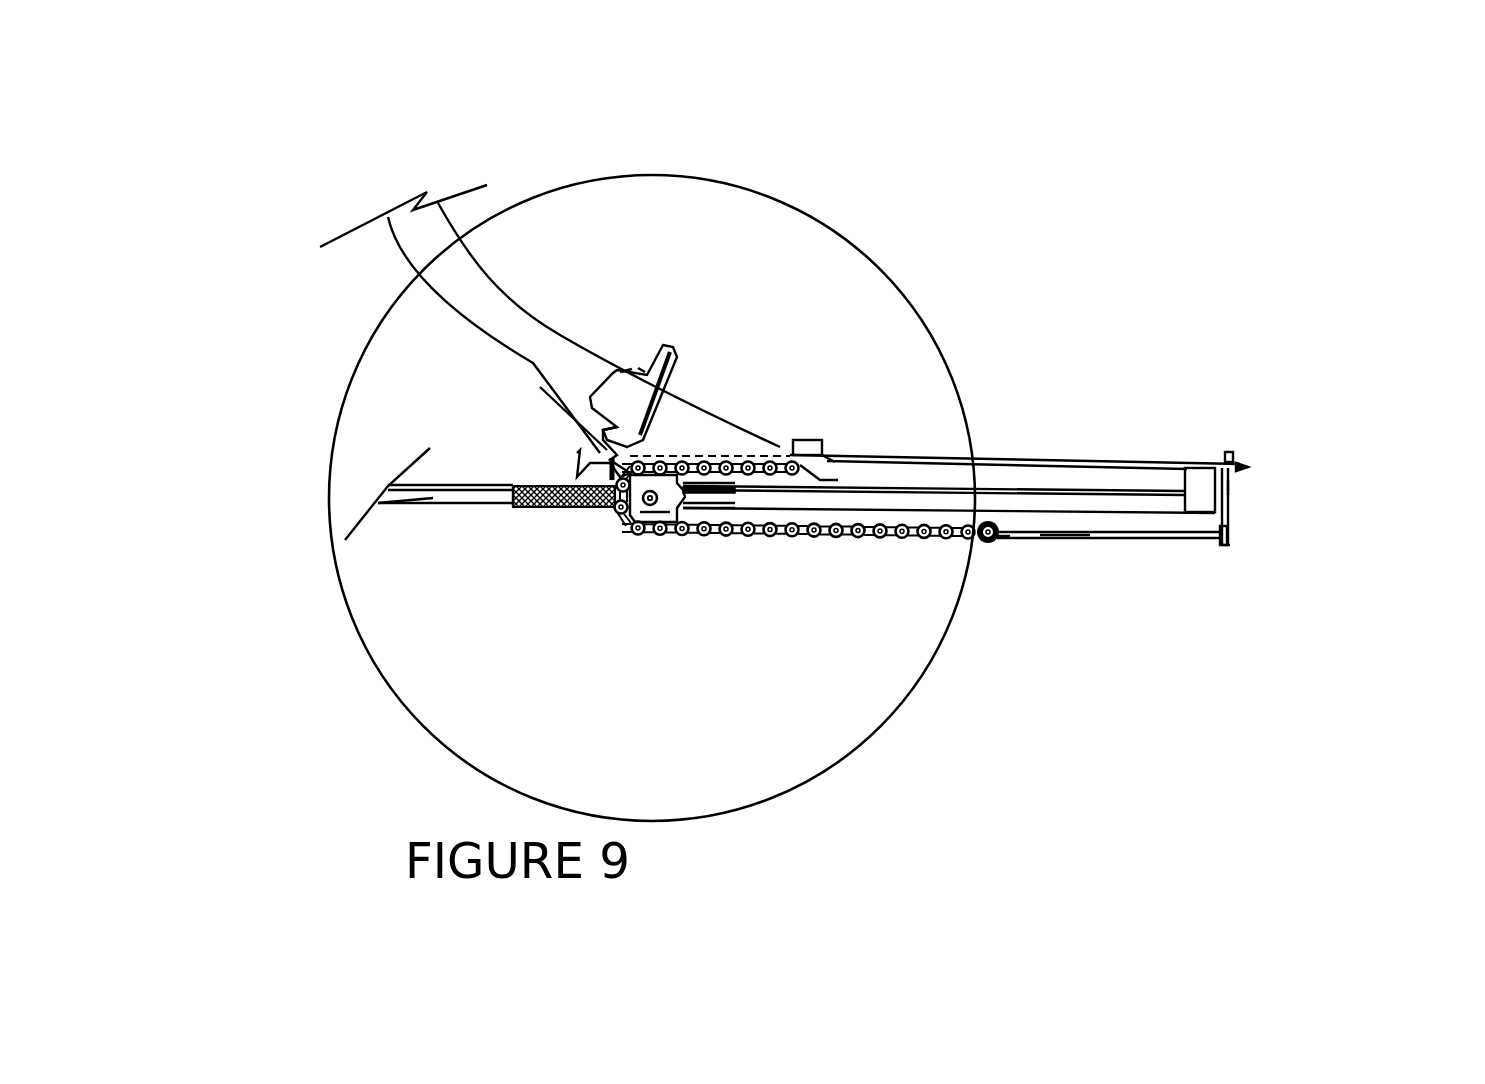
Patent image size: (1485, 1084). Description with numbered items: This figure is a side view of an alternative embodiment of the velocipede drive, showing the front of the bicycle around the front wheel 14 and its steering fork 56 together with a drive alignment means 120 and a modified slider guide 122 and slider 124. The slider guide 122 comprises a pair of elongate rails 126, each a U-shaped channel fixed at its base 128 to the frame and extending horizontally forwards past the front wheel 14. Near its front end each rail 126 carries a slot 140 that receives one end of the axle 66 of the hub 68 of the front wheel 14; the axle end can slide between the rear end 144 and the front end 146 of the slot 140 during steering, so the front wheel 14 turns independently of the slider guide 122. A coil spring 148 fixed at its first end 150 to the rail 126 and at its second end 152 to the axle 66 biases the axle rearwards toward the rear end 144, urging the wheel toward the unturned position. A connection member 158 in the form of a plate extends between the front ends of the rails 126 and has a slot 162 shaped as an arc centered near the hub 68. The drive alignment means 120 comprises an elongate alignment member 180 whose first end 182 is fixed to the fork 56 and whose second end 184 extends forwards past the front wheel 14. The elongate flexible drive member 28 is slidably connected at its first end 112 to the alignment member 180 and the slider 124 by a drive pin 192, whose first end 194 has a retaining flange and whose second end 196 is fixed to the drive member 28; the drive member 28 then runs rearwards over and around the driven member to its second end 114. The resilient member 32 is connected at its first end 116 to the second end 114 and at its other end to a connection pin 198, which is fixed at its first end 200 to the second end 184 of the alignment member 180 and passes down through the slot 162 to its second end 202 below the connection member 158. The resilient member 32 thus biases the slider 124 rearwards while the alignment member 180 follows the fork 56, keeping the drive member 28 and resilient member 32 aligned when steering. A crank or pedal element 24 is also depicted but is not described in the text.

The front wheel 14 is at (875, 260).
The steering fork 56 is at (418, 247).
The crank arm with pedal 24 is at (683, 412).
The first end 182 is at (582, 445).
The elongate rail 126 is at (295, 434).
The slider guide 122 is at (250, 487).
The base 128 is at (433, 498).
The coil spring 148 is at (533, 503).
The first end 150 is at (512, 498).
The axle 66 is at (657, 505).
The hub 68 is at (628, 512).
The second end 152 is at (651, 500).
The rear end 144 is at (666, 510).
The front end 146 is at (718, 505).
The slot 140 is at (690, 507).
The first end 112 is at (782, 457).
The alignment member 180 is at (1093, 458).
The first end 194 is at (810, 440).
The second end 196 is at (828, 455).
The drive pin 192 is at (838, 480).
The slider 124 is at (1013, 337).
The drive alignment means 120 is at (1135, 302).
The second end 184 is at (1197, 468).
The first end 200 is at (1223, 457).
The slot 162 is at (1243, 462).
The connection member 158 is at (1246, 468).
The connection pin 198 is at (1230, 487).
The second end 202 is at (1230, 545).
The resilient member 32 is at (1108, 535).
The first end 116 is at (1067, 537).
The second end 114 is at (992, 543).
The elongate flexible drive member 28 is at (913, 533).